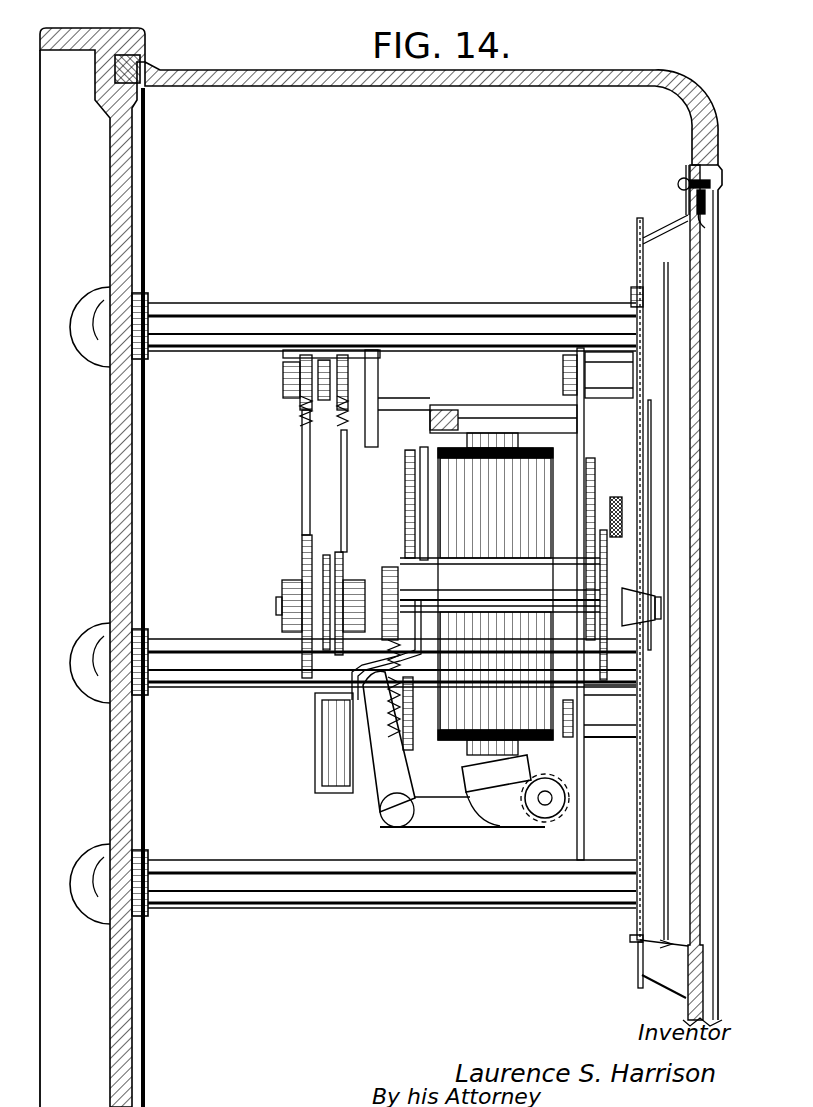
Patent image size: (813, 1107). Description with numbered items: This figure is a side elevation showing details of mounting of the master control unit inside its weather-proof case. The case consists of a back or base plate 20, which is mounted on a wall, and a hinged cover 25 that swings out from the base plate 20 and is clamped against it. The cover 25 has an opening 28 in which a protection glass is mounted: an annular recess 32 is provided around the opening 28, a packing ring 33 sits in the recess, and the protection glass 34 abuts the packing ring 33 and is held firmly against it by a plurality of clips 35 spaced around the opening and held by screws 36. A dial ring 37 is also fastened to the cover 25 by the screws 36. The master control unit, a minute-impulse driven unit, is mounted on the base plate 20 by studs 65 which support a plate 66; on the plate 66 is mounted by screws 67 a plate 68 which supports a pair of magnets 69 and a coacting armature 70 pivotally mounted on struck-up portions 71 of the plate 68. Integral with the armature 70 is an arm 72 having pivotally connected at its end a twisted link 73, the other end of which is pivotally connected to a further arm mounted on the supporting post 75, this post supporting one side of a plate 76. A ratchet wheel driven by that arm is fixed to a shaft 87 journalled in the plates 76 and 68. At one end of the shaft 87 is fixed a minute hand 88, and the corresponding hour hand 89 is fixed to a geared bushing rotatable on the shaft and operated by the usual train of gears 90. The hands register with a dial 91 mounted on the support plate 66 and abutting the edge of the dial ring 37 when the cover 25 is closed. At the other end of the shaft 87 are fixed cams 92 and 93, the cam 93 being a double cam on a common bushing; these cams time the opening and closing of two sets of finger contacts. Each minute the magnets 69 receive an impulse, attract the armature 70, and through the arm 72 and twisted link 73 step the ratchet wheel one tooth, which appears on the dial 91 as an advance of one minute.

The base plate 20 is at (146, 44).
The cover 25 is at (540, 76).
The opening 28 is at (712, 232).
The annular recess 32 is at (710, 208).
The packing ring 33 is at (700, 214).
The protection glass 34 is at (700, 364).
The clips 35 is at (689, 174).
The screws 36 is at (682, 184).
The dial ring 37 is at (660, 226).
The studs 65 is at (200, 332).
The plate 66 is at (633, 294).
The screws 67 is at (561, 368).
The plate 68 is at (580, 760).
The magnets 69 is at (548, 478).
The armature 70 is at (483, 776).
The struck-up portions 71 is at (565, 822).
The arm 72 is at (424, 826).
The twisted link 73 is at (378, 794).
The supporting post 75 is at (460, 570).
The plate 76 is at (421, 760).
The shaft 87 is at (361, 578).
The minute hand 88 is at (668, 433).
The hour hand 89 is at (652, 405).
The train of gears 90 is at (604, 510).
The dial 91 is at (638, 250).
The cam 92 is at (300, 548).
The cam 93 is at (335, 560).